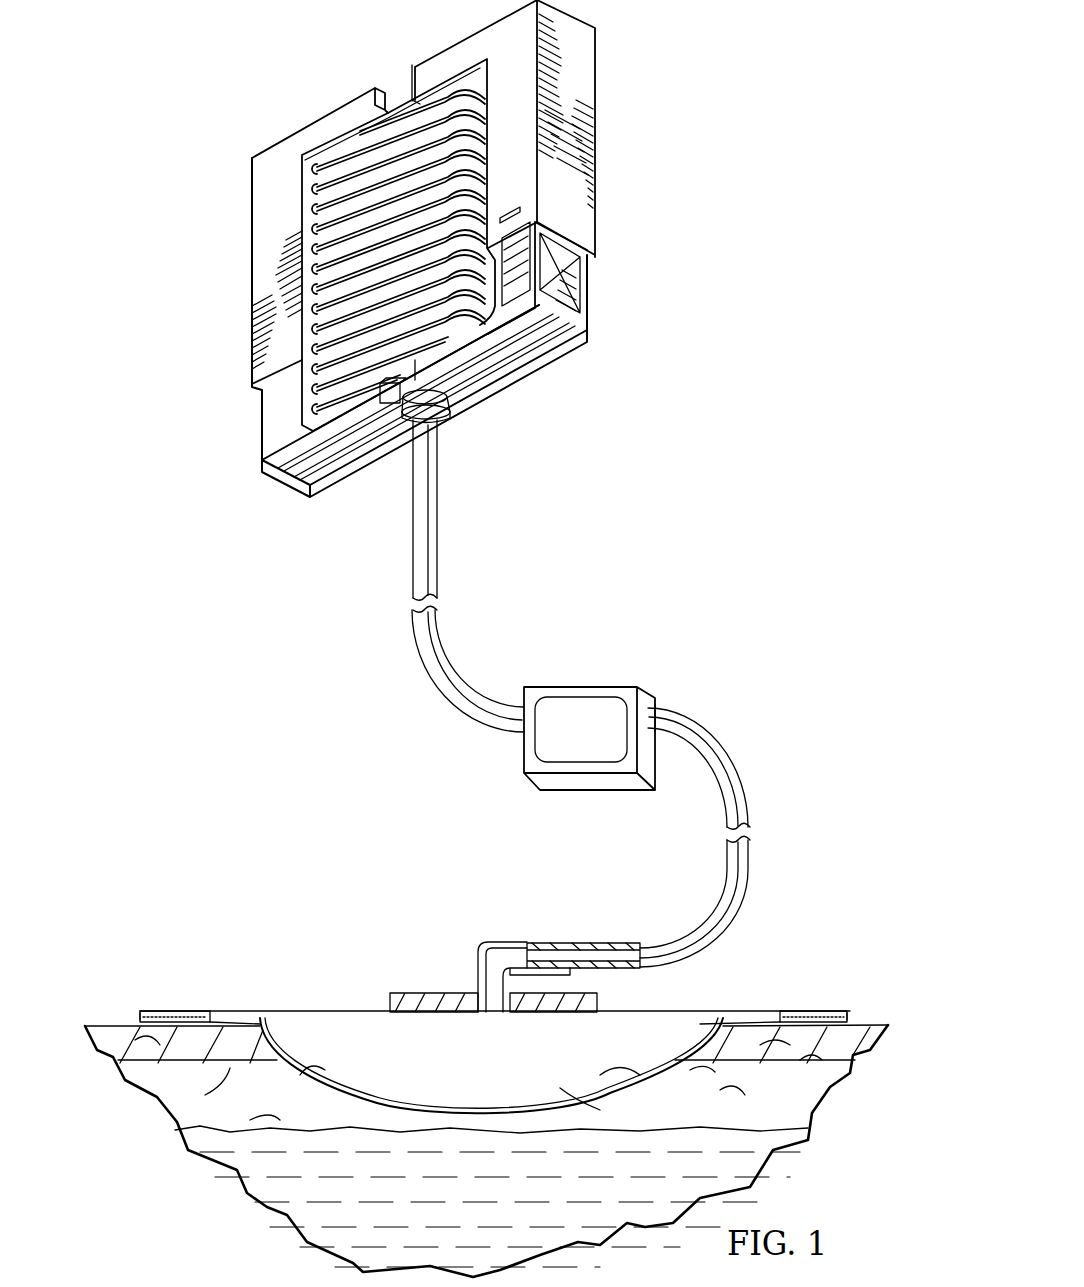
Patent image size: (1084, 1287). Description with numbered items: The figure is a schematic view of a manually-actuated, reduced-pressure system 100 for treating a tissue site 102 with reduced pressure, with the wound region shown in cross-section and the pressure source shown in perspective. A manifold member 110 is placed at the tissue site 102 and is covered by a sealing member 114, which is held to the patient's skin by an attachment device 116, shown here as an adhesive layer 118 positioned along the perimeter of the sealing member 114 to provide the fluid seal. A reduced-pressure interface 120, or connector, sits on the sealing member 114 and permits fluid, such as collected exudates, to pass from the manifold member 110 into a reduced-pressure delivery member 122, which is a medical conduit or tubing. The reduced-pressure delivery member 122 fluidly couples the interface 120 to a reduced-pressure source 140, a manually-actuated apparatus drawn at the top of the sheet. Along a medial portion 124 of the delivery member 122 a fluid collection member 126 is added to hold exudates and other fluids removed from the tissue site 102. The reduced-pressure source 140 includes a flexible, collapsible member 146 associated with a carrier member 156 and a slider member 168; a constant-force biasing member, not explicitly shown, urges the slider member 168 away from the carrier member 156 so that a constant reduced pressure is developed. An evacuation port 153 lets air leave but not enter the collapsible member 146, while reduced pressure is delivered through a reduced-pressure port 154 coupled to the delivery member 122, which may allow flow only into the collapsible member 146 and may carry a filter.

The manually-actuated, reduced-pressure system 100 is at (408, 853).
The tissue site 102 is at (256, 1018).
The manifold member 110 is at (512, 1073).
The sealing member 114 is at (328, 1011).
The attachment device 116 is at (145, 1011).
The adhesive layer 118 is at (138, 1014).
The reduced-pressure interface 120 is at (533, 942).
The reduced-pressure delivery member 122 is at (412, 535).
The medial portion 124 is at (705, 720).
The fluid collection member 126 is at (599, 687).
The reduced-pressure source 140 is at (655, 158).
The flexible, collapsible member 146 is at (313, 203).
The evacuation port 153 is at (406, 93).
The reduced-pressure port 154 is at (442, 420).
The carrier member 156 is at (600, 57).
The slider member 168 is at (262, 430).